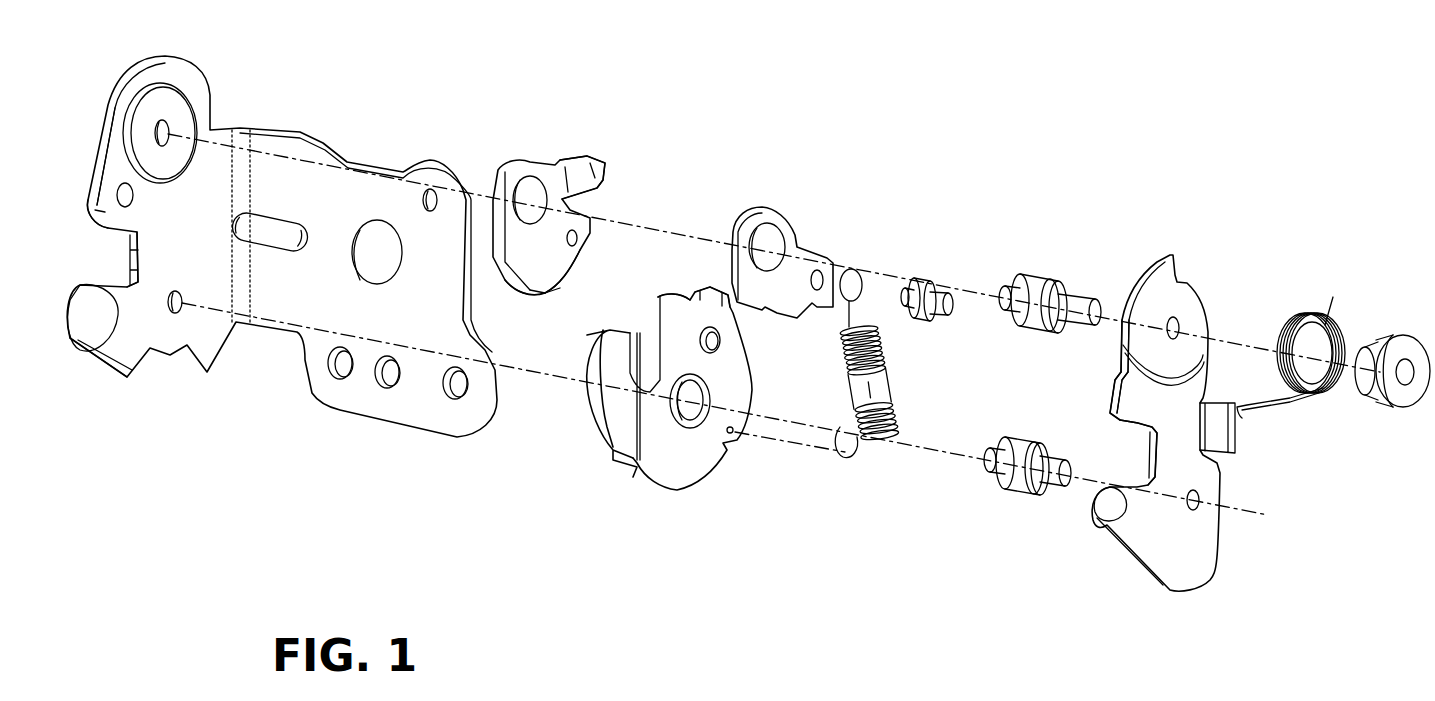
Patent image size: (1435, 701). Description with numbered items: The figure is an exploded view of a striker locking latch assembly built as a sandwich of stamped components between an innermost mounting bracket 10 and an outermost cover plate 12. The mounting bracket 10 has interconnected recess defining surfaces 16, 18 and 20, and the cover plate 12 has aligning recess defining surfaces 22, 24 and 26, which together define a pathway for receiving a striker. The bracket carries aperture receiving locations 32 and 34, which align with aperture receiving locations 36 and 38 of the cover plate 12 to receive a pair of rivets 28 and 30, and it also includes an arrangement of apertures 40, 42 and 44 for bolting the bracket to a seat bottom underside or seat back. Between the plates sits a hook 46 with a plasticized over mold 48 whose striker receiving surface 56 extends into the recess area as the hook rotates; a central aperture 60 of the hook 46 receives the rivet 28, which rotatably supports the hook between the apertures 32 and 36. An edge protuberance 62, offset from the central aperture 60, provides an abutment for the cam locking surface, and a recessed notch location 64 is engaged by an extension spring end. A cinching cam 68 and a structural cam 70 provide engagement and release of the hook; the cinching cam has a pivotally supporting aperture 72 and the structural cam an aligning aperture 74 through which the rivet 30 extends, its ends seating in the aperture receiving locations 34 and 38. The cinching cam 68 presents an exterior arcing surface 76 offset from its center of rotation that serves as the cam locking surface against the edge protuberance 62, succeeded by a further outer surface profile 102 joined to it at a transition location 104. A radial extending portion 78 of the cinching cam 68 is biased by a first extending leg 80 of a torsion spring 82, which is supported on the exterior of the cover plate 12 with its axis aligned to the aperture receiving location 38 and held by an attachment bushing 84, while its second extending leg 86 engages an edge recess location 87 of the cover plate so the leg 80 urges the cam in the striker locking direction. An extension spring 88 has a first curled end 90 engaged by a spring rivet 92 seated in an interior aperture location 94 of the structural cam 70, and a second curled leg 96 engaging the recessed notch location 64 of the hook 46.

The mounting bracket 10 is at (287, 146).
The cover plate 12 is at (1150, 560).
The recess defining surface 16 is at (97, 193).
The recess defining surface 18 is at (130, 258).
The recess defining surface 20 is at (95, 355).
The recess defining surface 22 is at (1117, 412).
The recess defining surface 24 is at (1143, 465).
The recess defining surface 26 is at (1103, 495).
The rivet 28 is at (1000, 477).
The rivet 30 is at (1030, 282).
The aperture receiving location 32 is at (177, 312).
The aperture receiving location 34 is at (165, 128).
The aperture receiving location 36 is at (1193, 507).
The aperture receiving location 38 is at (1180, 324).
The aperture 40 is at (333, 368).
The aperture 42 is at (373, 382).
The aperture 44 is at (443, 395).
The hook 46 is at (600, 420).
The plasticized over mold 48 is at (665, 475).
The striker receiving surface 56 is at (633, 332).
The central aperture 60 is at (690, 405).
The edge protuberance 62 is at (692, 292).
The recessed notch location 64 is at (732, 440).
The cinching cam 68 is at (580, 258).
The structural cam 70 is at (770, 320).
The pivotally supporting aperture 72 is at (520, 176).
The aperture 74 is at (770, 225).
The exterior arcing surface 76 is at (558, 292).
The radial extending portion 78 is at (595, 163).
The first extending leg 80 is at (1325, 302).
The torsion spring 82 is at (1320, 391).
The attachment bushing 84 is at (1366, 345).
The second extending leg 86 is at (1240, 407).
The edge recess location 87 is at (1117, 366).
The extension spring 88 is at (885, 376).
The first curled end 90 is at (858, 275).
The spring rivet 92 is at (935, 292).
The interior aperture location 94 is at (822, 274).
The second curled leg 96 is at (838, 452).
The outer surface profile 102 is at (562, 285).
The transition location 104 is at (548, 295).